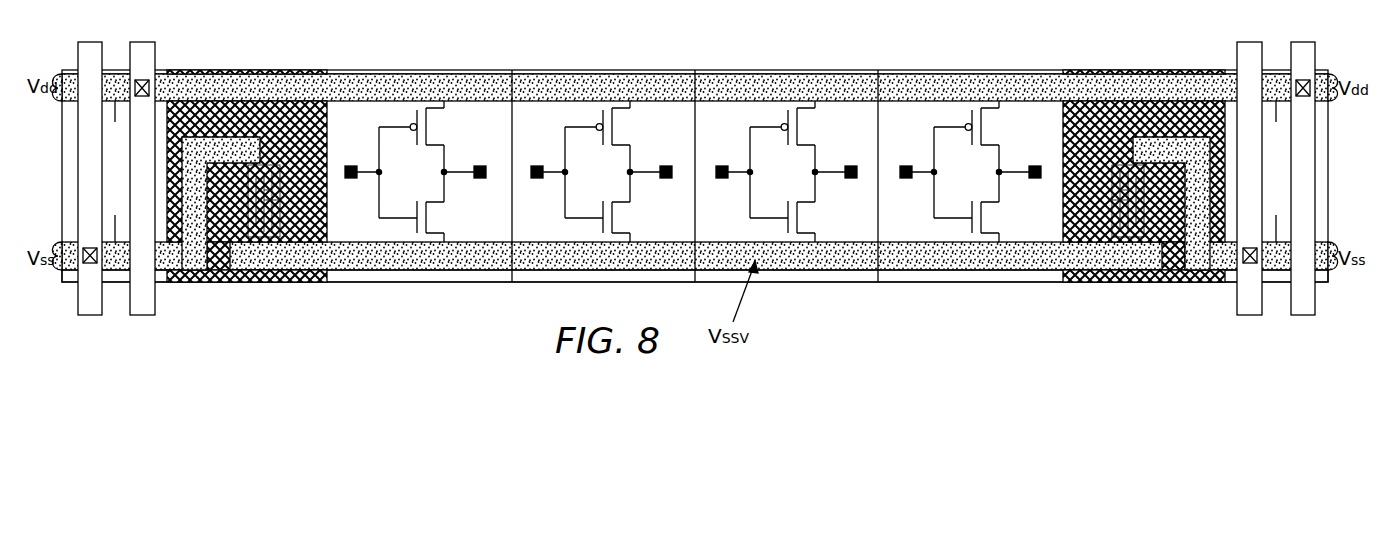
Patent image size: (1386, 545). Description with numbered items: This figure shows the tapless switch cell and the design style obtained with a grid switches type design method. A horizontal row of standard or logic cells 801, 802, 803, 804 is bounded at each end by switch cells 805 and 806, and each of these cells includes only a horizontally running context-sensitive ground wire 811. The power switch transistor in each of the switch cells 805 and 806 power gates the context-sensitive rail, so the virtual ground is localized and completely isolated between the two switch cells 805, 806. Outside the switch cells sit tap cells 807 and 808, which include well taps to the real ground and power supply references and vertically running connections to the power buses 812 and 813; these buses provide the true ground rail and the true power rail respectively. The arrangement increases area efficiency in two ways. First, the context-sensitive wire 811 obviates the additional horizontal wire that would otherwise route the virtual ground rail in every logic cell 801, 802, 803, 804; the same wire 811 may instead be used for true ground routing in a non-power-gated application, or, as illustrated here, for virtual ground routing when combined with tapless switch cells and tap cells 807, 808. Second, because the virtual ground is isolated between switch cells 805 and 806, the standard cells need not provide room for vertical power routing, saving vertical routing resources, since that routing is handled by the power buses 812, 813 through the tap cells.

The logic cell 801 is at (423, 68).
The logic cell 802 is at (609, 68).
The logic cell 803 is at (791, 68).
The logic cell 804 is at (978, 68).
The switch cell 805 is at (248, 68).
The switch cell 806 is at (1141, 68).
The tap cell 807 is at (113, 68).
The tap cell 808 is at (1275, 68).
The context-sensitive ground wire 811 is at (956, 283).
The power bus 812 is at (91, 308).
The power bus 813 is at (143, 308).